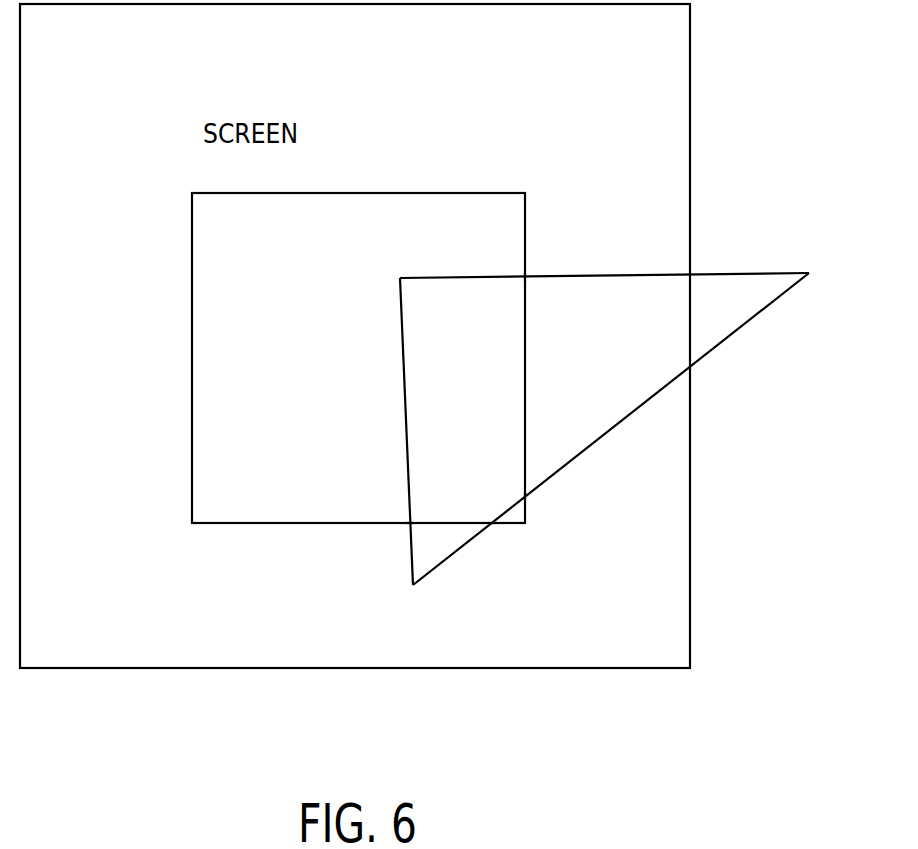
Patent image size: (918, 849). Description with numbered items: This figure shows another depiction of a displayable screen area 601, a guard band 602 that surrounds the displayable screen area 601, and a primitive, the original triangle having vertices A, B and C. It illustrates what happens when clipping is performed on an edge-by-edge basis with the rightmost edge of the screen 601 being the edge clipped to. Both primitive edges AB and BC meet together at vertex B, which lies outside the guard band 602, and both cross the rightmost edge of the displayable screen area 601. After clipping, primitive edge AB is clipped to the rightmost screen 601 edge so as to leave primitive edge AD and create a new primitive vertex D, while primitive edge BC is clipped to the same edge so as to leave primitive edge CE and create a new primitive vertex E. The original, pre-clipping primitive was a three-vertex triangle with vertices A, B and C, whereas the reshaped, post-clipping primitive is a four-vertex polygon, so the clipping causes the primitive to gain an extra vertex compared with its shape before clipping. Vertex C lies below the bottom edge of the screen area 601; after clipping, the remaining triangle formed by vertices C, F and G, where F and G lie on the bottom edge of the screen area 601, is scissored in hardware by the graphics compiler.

The displayable screen area 601 is at (272, 273).
The guard band 602 is at (148, 88).
The primitive vertex A is at (593, 262).
The primitive vertex B is at (617, 412).
The primitive vertex C is at (401, 451).
The new primitive vertex D is at (509, 260).
The new primitive vertex E is at (541, 511).
The vertex F is at (392, 504).
The vertex G is at (497, 543).